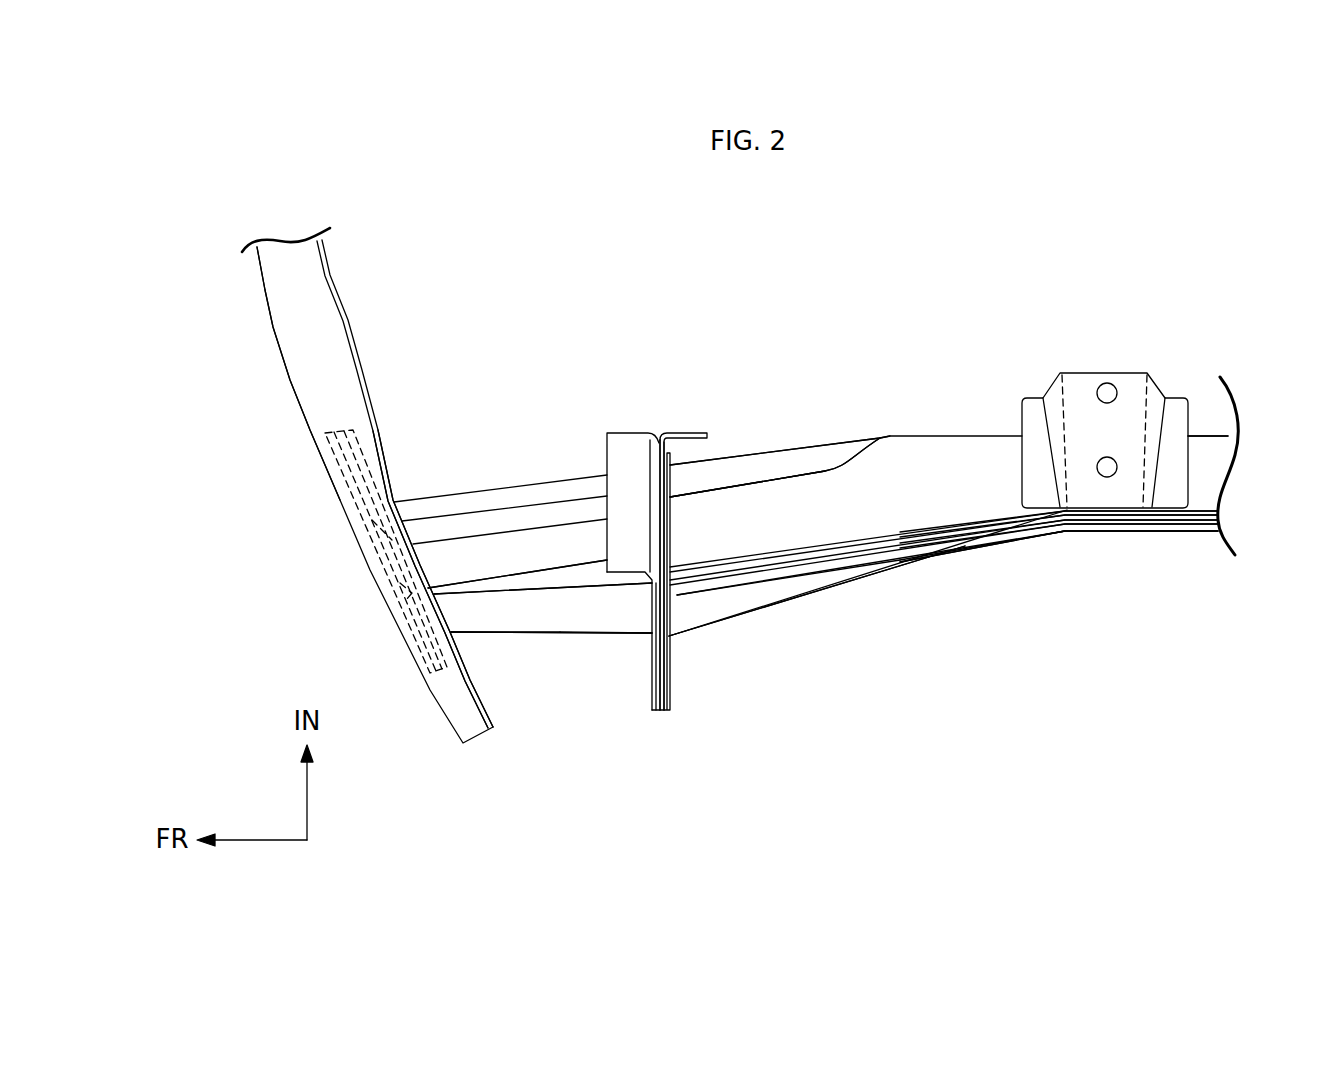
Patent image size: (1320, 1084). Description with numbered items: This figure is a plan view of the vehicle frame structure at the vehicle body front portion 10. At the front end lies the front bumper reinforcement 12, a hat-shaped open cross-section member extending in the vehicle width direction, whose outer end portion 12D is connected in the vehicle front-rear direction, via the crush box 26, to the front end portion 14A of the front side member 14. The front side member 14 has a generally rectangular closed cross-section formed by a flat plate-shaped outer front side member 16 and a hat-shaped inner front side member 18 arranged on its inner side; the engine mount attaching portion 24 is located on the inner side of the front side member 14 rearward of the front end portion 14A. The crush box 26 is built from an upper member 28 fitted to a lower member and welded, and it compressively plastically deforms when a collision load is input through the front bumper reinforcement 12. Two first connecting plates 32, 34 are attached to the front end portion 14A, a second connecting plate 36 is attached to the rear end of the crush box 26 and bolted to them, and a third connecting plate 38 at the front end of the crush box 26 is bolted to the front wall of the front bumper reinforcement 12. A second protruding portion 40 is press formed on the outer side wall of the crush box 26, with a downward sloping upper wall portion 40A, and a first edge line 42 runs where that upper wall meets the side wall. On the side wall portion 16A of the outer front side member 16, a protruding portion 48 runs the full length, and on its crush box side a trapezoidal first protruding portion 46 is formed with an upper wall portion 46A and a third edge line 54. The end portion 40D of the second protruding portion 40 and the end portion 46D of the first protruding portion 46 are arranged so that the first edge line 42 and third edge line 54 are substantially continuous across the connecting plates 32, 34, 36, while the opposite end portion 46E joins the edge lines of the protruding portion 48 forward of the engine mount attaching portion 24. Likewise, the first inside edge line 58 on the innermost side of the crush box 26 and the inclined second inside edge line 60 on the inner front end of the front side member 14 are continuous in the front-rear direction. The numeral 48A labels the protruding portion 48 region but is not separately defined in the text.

The vehicle body front portion 10 is at (250, 472).
The front bumper reinforcement 12 is at (272, 327).
The end portion 12D is at (393, 617).
The front side member 14 is at (956, 418).
The front end portion 14A is at (718, 512).
The outer front side member 16 is at (1052, 539).
The side wall portion 16A is at (1107, 531).
The inner front side member 18 is at (1213, 442).
The engine mount attaching portion 24 is at (1130, 375).
The crush box 26 is at (553, 668).
The upper member 28 is at (517, 543).
The first connecting plate 32 is at (682, 433).
The first connecting plate 34 is at (630, 433).
The second connecting plate 36 is at (655, 710).
The third connecting plate 38 is at (330, 497).
The second protruding portion 40 is at (530, 635).
The upper wall portion 40A is at (493, 610).
The end portion 40D is at (630, 617).
The first edge line 42 is at (572, 631).
The first protruding portion 46 is at (747, 613).
The upper wall portion 46A is at (777, 582).
The end portion 46D is at (683, 600).
The end portion 46E is at (937, 553).
The protruding portion 48 is at (1059, 546).
The joint flange 48A is at (1167, 532).
The third edge line 54 is at (835, 582).
The first inside edge line 58 is at (460, 487).
The second inside edge line 60 is at (822, 444).